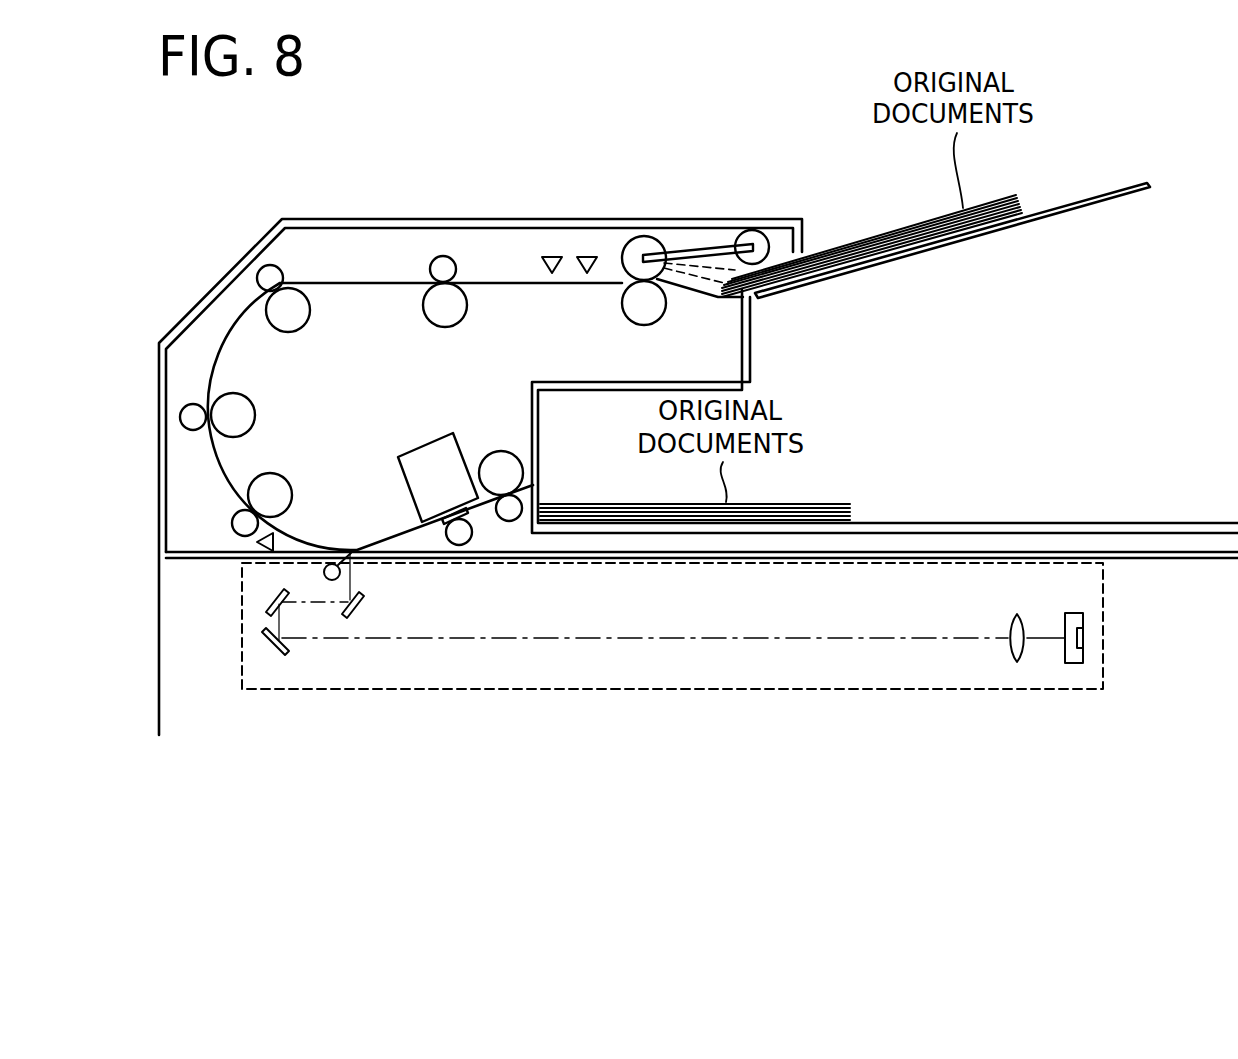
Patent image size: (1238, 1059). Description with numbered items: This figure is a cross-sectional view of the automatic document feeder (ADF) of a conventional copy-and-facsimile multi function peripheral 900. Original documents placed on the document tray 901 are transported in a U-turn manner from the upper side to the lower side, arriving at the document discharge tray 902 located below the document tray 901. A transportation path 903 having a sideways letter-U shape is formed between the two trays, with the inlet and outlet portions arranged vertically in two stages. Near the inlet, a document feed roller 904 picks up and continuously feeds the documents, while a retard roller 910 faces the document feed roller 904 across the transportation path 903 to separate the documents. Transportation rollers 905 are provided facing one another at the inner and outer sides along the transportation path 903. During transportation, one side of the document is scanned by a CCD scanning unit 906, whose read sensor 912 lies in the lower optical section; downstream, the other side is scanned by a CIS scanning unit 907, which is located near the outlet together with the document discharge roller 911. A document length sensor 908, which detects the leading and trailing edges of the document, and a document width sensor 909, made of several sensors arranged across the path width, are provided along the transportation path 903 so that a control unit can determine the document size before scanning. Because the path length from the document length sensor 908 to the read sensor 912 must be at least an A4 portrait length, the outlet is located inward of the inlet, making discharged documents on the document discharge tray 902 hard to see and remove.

The copy-and-facsimile Multi Function Peripheral (MFP) 900 is at (347, 750).
The document tray 901 is at (1095, 192).
The document discharge tray 902 is at (932, 523).
The transportation path 903 is at (363, 283).
The document feed roller 904 is at (644, 236).
The transportation rollers 905 is at (430, 325).
The CCD scanning unit 906 is at (492, 708).
The CIS scanning unit 907 is at (425, 446).
The document length sensor 908 is at (587, 256).
The document width sensor 909 is at (552, 256).
The retard roller 910 is at (644, 325).
The document discharge roller 911 is at (500, 451).
The read sensor 912 is at (278, 546).